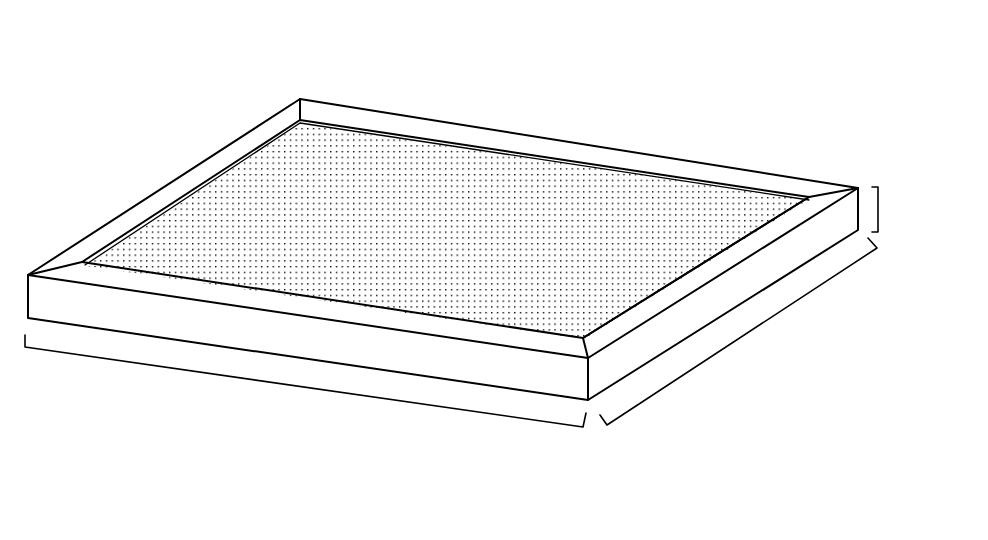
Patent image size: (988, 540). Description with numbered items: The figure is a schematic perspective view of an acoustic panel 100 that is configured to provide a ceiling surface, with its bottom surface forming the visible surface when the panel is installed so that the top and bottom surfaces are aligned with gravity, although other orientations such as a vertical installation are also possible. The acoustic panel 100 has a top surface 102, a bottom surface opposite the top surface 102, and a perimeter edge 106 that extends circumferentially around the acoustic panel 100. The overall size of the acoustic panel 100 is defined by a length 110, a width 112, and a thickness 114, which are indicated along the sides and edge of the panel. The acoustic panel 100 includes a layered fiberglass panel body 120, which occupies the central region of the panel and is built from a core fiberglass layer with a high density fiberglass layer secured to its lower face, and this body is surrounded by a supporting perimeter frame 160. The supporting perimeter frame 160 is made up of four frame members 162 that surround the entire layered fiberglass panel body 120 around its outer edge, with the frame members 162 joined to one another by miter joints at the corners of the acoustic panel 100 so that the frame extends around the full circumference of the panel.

The acoustic panel 100 is at (170, 68).
The top surface 102 is at (507, 188).
The perimeter edge 106 is at (157, 197).
The length 110 is at (742, 336).
The width 112 is at (303, 387).
The thickness 114 is at (878, 209).
The layered fiberglass panel body 120 is at (372, 165).
The supporting perimeter frame 160 is at (636, 127).
The frame member 162 is at (810, 210).